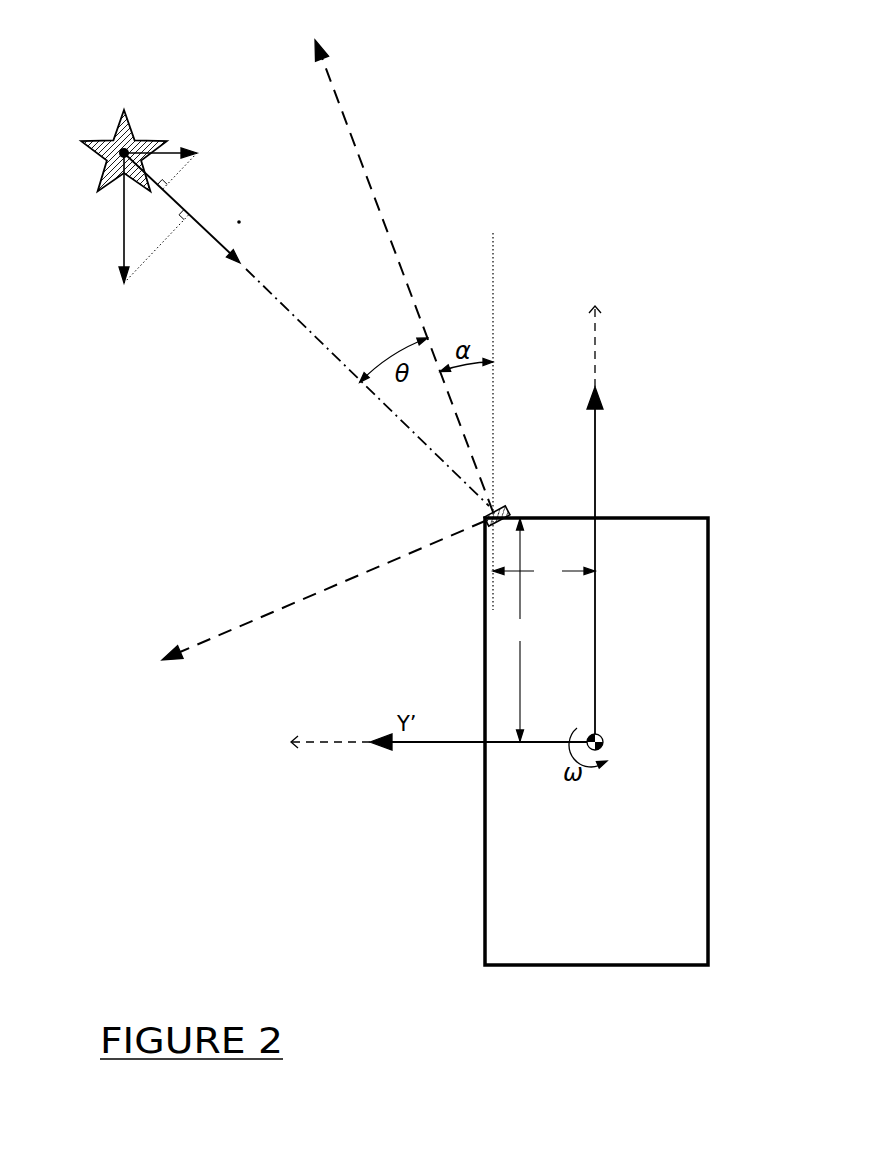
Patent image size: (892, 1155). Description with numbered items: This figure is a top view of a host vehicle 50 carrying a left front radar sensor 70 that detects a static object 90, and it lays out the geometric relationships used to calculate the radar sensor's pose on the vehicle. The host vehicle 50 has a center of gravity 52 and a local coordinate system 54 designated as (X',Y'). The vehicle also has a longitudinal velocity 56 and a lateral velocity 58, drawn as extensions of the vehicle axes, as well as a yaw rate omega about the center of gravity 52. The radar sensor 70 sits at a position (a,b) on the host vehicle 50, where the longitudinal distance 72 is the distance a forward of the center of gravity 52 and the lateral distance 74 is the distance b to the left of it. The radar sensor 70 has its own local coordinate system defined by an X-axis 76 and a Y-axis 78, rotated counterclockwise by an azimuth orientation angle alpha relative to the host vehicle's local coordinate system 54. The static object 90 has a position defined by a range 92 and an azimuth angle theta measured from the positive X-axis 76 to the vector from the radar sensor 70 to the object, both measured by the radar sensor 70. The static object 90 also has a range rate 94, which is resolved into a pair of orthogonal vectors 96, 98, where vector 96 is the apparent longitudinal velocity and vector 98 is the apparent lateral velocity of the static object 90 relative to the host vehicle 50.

The host vehicle 50 is at (709, 910).
The center of gravity 52 is at (604, 742).
The local coordinate system 54 is at (595, 713).
The longitudinal velocity 56 is at (597, 358).
The lateral velocity 58 is at (323, 745).
The radar sensor 70 is at (508, 514).
The longitudinal distance 72 is at (520, 630).
The lateral distance 74 is at (544, 571).
The X-axis 76 is at (385, 222).
The Y-axis 78 is at (342, 590).
The static object 90 is at (131, 127).
The range 92 is at (338, 358).
The range rate 94 is at (213, 243).
The apparent longitudinal velocity vector 96 is at (122, 225).
The apparent lateral velocity vector 98 is at (170, 148).